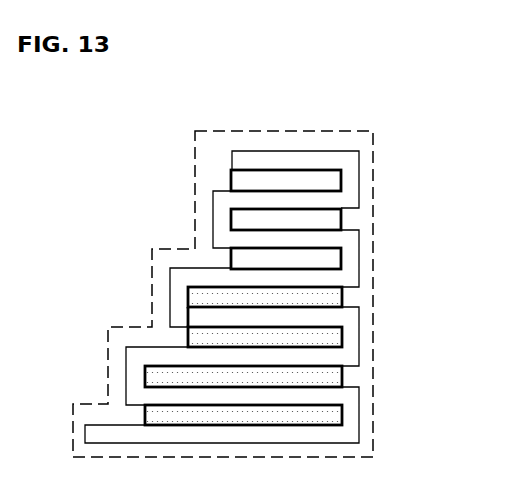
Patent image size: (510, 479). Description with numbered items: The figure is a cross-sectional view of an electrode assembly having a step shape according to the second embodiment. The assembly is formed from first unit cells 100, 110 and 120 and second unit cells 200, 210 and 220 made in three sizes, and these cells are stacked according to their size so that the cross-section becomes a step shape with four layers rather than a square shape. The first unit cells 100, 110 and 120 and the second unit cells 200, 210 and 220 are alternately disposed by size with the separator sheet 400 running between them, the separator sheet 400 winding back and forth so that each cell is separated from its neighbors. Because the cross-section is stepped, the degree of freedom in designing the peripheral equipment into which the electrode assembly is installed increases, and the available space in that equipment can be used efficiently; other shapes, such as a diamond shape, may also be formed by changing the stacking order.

The first unit cell 100 is at (231, 185).
The first unit cell 110 is at (172, 337).
The first unit cell 120 is at (143, 416).
The second unit cell 200 is at (343, 220).
The second unit cell 210 is at (343, 296).
The second unit cell 220 is at (343, 375).
The separator sheet 400 is at (292, 158).